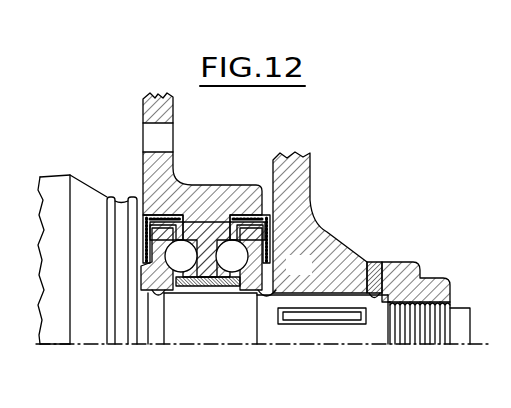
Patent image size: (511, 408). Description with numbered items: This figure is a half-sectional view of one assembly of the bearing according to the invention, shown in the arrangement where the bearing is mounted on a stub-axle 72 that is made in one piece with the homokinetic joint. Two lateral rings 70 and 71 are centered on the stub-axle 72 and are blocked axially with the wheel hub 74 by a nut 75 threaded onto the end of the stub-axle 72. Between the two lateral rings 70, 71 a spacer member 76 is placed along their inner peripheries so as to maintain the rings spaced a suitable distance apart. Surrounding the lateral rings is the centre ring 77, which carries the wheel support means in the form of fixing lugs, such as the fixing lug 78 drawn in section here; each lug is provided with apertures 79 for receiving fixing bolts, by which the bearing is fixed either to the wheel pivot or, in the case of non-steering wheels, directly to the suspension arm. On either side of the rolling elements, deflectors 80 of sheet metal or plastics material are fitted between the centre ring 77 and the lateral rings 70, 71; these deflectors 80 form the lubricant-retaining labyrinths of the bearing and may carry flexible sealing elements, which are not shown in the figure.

The lateral ring 70 is at (157, 280).
The lateral ring 71 is at (266, 278).
The stub-axle 72 is at (243, 330).
The wheel hub 74 is at (297, 186).
The nut 75 is at (410, 262).
The spacer member 76 is at (222, 291).
The centre ring 77 is at (204, 238).
The fixing lug 78 is at (157, 108).
The aperture 79 is at (157, 148).
The deflector 80 is at (143, 238).